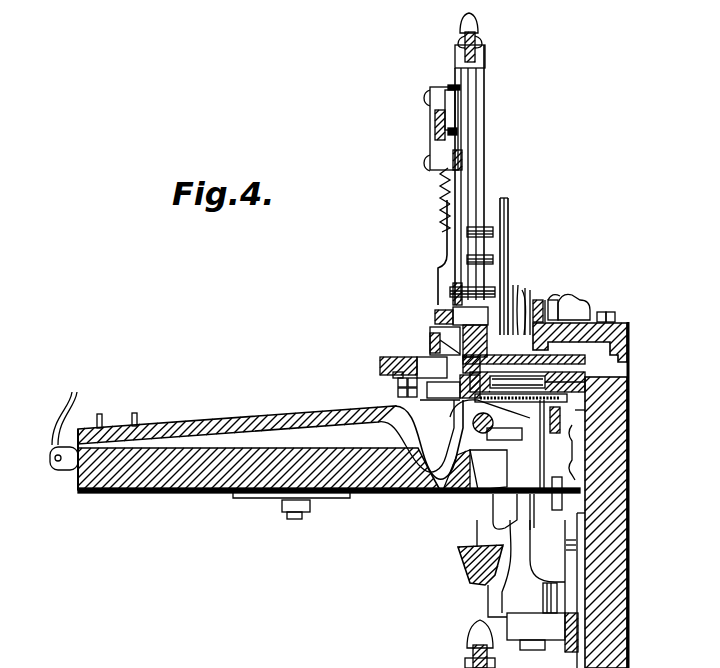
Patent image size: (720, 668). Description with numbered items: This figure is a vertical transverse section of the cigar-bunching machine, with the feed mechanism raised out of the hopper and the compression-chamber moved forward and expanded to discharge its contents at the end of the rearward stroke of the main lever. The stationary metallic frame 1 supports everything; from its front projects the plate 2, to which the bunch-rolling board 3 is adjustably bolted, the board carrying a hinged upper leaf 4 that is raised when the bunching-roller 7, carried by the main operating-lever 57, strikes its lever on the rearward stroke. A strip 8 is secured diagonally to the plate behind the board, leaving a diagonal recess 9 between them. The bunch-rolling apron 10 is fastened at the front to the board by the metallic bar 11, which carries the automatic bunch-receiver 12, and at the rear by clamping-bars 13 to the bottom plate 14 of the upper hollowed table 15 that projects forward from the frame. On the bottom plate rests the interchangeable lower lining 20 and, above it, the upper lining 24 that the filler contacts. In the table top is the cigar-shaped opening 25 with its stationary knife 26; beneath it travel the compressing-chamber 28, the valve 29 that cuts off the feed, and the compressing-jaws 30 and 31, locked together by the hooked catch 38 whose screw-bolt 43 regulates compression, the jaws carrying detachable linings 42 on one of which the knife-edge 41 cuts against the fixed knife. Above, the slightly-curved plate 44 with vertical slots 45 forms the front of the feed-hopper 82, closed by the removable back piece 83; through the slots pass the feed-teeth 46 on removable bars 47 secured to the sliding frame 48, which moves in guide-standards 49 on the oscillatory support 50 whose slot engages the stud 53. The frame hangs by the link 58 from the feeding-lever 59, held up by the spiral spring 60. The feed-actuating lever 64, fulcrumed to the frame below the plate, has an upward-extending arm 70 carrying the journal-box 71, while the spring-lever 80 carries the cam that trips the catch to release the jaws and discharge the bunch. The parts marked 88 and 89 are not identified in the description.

The stationary metallic frame 1 is at (640, 493).
The plate 2 is at (373, 494).
The bunch-rolling board 3 is at (168, 497).
The upper automatically-adjustable leaf 4 is at (213, 424).
The bunching-roller 7 is at (475, 428).
The strip 8 is at (475, 470).
The diagonal recess 9 is at (428, 494).
The bunch-rolling apron 10 is at (429, 439).
The metallic plate or bar 11 is at (70, 478).
The automatic bunch-receiver 12 is at (54, 437).
The clamping-bars 13 is at (440, 408).
The bottom plate 14 is at (567, 397).
The upper hollowed table 15 is at (620, 322).
The lower lining 20 is at (560, 374).
The upper lining 24 is at (548, 378).
The cigar-shaped opening 25 is at (523, 300).
The stationary knife 26 is at (514, 296).
The compressing-chamber 28 is at (432, 367).
The valve 29 is at (572, 363).
The compressing-jaw 30 is at (478, 348).
The compressing-jaw 31 is at (385, 357).
The hooked catch 38 is at (444, 390).
The knife-edge 41 is at (452, 344).
The detachable linings 42 is at (428, 352).
The screw-bolt 43 is at (398, 391).
The slightly-curved plate 44 is at (516, 266).
The vertical slots 45 is at (508, 246).
The feed pins or teeth 46 is at (480, 226).
The removable vertically-arranged bars 47 is at (470, 218).
The rectangular sliding frame 48 is at (460, 142).
The guide-standards 49 is at (481, 159).
The horizontally-oscillatory support 50 is at (436, 315).
The stud 53 is at (551, 299).
The main operating-lever 57 is at (470, 572).
The link 58 is at (448, 86).
The feeding-lever 59 is at (430, 126).
The spiral spring 60 is at (442, 198).
The feed-actuating lever 64 is at (570, 570).
The upward-extending arm 70 is at (583, 433).
The journal-box 71 is at (578, 308).
The spring-lever 80 is at (588, 417).
The feed-hopper 82 is at (547, 300).
The removable back piece 83 is at (546, 311).
The wall 88 is at (416, 436).
The block 89 is at (524, 455).